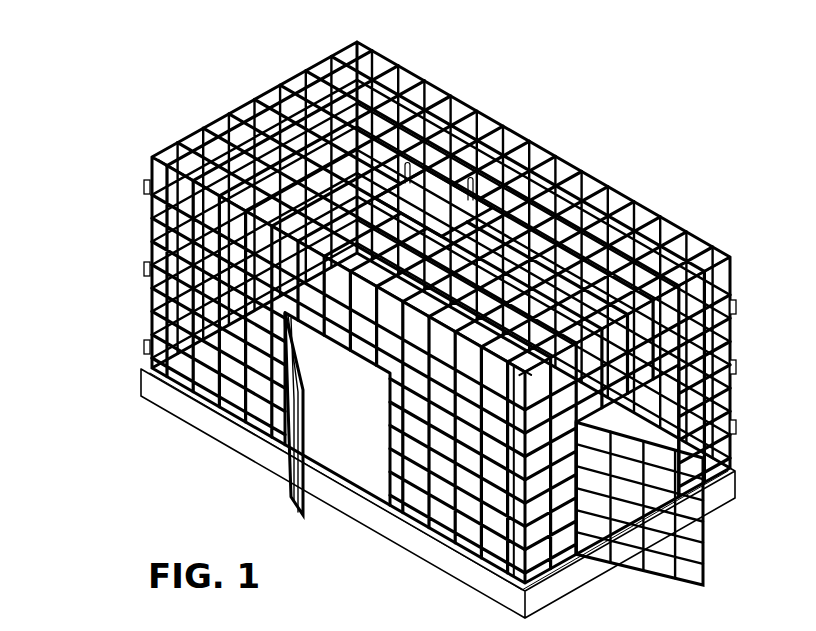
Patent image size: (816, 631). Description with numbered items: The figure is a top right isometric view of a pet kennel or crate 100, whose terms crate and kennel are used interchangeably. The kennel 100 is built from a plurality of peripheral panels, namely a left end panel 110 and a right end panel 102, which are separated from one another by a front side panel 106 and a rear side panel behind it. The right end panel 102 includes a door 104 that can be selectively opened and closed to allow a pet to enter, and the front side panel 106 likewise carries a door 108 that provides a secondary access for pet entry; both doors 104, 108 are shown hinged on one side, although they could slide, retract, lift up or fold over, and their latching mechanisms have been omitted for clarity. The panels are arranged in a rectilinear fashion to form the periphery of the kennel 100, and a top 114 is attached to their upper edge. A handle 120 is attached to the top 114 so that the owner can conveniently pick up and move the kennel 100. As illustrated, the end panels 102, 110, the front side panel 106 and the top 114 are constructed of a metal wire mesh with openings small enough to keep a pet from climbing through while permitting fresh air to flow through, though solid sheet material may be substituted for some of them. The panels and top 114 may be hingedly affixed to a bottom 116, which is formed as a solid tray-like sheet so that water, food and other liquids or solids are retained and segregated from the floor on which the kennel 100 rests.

The pet kennel 100 is at (578, 78).
The right end panel 102 is at (735, 312).
The door 104 is at (707, 540).
The front side panel 106 is at (148, 320).
The door 108 is at (292, 492).
The left end panel 110 is at (145, 222).
The top 114 is at (626, 224).
The bottom 116 is at (210, 440).
The handle 120 is at (449, 187).